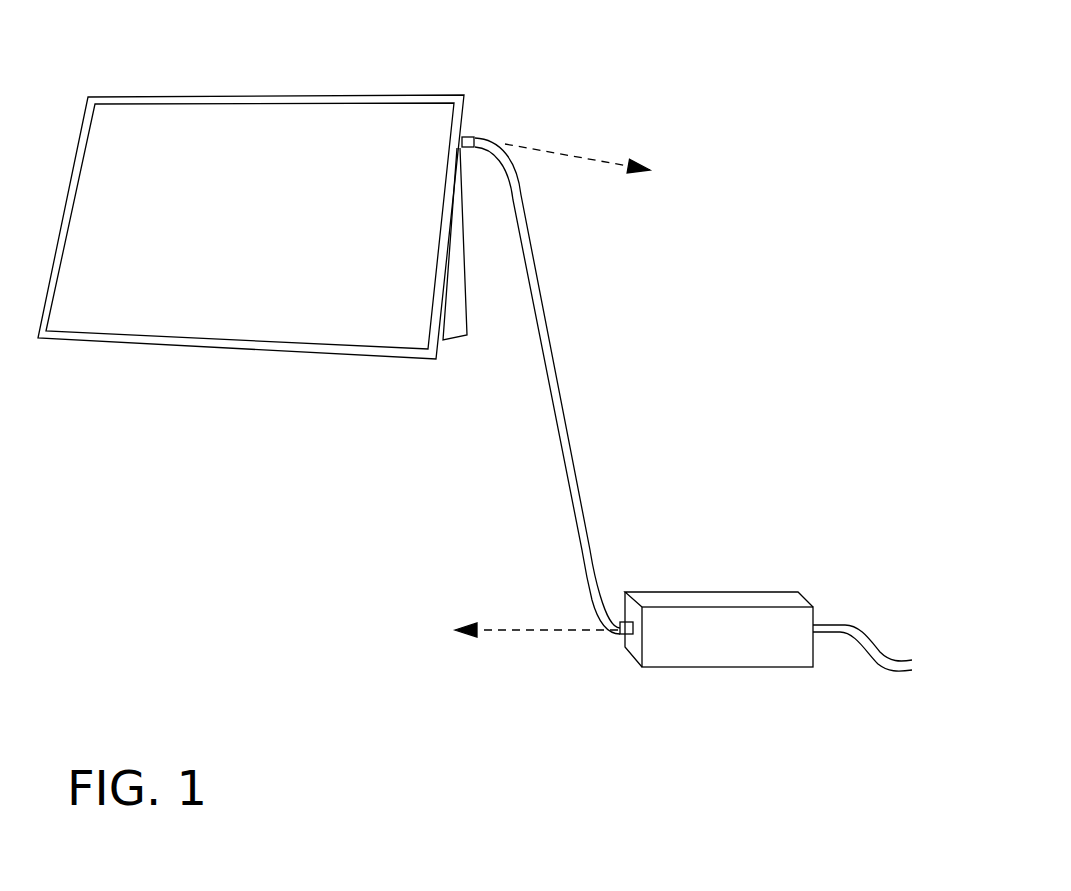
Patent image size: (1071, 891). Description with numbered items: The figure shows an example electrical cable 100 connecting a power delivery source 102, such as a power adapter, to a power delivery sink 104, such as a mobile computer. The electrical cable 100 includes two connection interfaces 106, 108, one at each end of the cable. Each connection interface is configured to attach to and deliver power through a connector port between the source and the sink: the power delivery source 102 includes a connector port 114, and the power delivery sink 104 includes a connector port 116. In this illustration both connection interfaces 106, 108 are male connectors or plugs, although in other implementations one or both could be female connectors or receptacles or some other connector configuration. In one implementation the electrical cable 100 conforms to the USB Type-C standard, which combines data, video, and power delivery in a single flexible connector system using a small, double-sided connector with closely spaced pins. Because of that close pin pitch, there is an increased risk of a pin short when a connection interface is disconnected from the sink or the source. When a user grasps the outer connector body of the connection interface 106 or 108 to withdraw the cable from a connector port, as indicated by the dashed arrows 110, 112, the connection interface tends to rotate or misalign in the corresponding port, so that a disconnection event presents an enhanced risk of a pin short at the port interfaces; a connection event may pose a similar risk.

The electrical cable 100 is at (553, 432).
The power delivery source 102 is at (762, 667).
The power delivery sink 104 is at (178, 345).
The connection interface 106 is at (620, 635).
The connection interface 108 is at (472, 135).
The dashed arrow 110 is at (492, 630).
The dashed arrow 112 is at (593, 162).
The connector port 114 is at (619, 592).
The connector port 116 is at (450, 122).